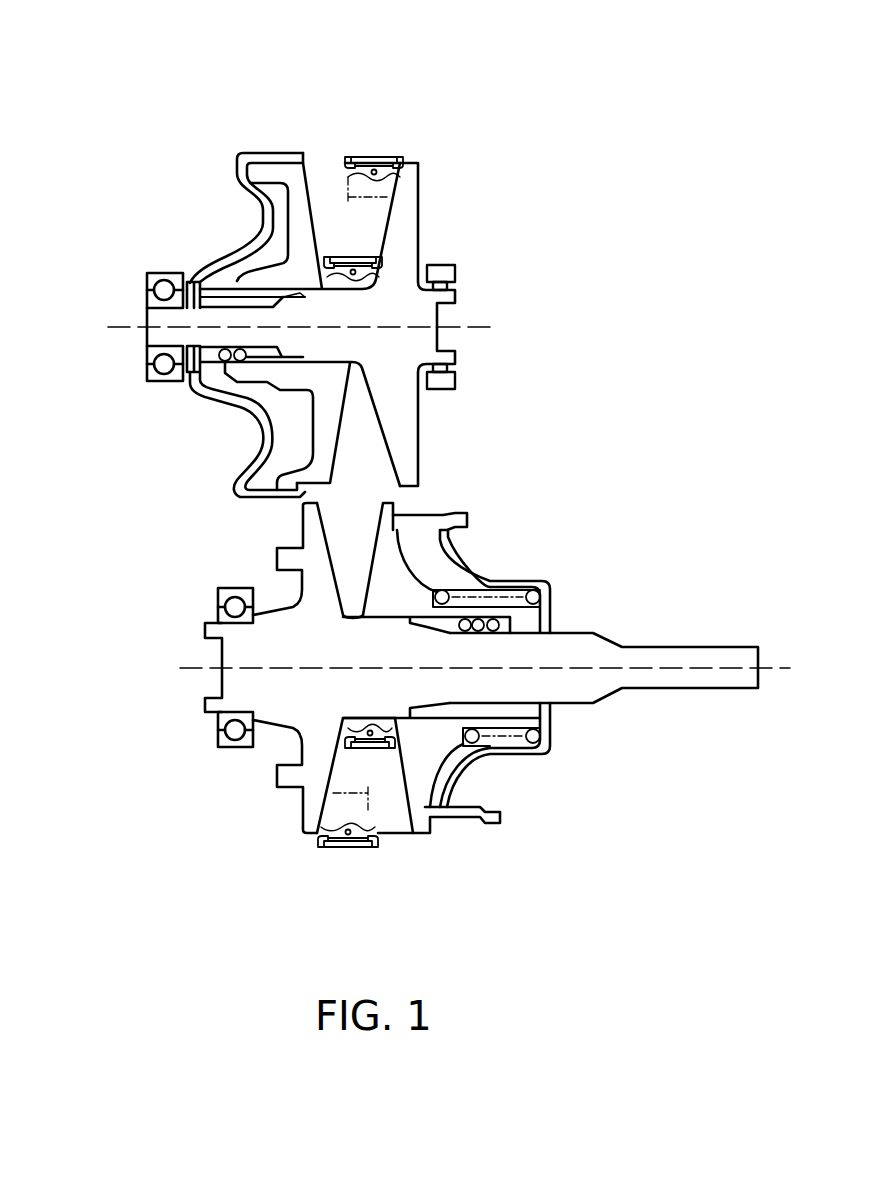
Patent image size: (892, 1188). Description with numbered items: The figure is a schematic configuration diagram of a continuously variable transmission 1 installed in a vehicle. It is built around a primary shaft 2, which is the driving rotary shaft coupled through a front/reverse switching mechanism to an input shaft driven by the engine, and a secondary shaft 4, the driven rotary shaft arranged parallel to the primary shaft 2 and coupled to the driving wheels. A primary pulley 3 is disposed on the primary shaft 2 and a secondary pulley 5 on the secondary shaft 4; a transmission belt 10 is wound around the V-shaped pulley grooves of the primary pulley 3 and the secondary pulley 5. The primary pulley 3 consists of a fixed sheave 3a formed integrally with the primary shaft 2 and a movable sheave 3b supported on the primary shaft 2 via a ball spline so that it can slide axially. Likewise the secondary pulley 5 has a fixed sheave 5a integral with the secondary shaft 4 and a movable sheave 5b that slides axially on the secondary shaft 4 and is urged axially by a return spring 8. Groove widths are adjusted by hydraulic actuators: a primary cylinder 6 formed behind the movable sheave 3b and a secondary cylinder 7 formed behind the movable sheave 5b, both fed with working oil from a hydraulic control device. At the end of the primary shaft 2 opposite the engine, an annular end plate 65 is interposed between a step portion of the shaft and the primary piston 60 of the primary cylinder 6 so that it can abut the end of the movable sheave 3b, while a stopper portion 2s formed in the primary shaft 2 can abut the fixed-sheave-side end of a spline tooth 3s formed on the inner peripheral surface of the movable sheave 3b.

The continuously variable transmission 1 is at (549, 421).
The primary shaft 2 is at (150, 322).
The stopper portion 2s is at (277, 297).
The primary pulley 3 is at (318, 78).
The fixed sheave 3a is at (407, 190).
The movable sheave 3b is at (312, 195).
The spline tooth 3s is at (283, 297).
The secondary shaft 4 is at (593, 653).
The secondary pulley 5 is at (283, 920).
The fixed sheave 5a is at (303, 833).
The movable sheave 5b is at (420, 797).
The primary cylinder 6 is at (232, 235).
The primary piston 60 is at (257, 430).
The end plate 65 is at (190, 278).
The secondary cylinder 7 is at (475, 777).
The return spring 8 is at (550, 590).
The transmission belt 10 is at (377, 267).